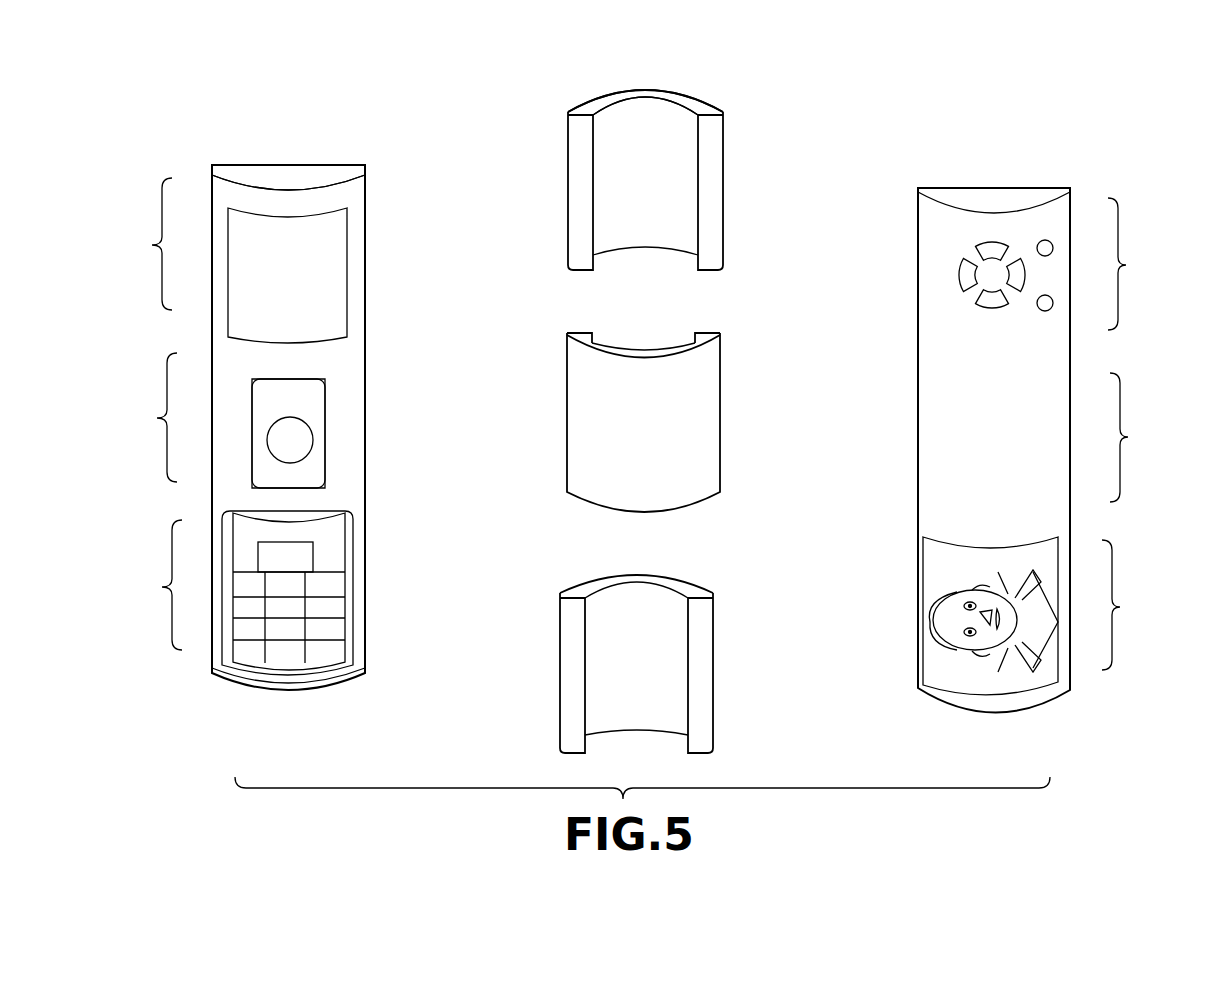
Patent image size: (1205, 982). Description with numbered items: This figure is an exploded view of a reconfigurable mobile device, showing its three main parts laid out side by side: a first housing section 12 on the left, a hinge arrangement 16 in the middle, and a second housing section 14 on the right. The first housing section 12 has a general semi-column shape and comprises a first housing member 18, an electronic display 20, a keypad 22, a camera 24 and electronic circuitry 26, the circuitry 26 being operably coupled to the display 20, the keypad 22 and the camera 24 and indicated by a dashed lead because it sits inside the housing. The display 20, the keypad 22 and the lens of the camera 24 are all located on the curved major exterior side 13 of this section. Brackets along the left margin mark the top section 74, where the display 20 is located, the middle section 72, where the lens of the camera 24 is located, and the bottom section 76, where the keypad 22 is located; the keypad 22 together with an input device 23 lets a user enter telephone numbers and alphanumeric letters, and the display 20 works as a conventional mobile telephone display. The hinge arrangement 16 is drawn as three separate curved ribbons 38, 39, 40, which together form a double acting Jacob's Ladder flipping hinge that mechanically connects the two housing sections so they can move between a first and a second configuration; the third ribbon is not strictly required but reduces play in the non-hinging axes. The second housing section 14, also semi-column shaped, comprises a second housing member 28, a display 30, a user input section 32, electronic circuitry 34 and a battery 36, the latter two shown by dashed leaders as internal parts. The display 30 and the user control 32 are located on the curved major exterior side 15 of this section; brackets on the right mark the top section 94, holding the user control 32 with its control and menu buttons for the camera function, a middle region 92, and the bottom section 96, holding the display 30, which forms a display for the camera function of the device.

The first housing section 12 is at (282, 691).
The major exterior side 13 is at (313, 200).
The second housing section 14 is at (960, 712).
The major exterior side 15 is at (1050, 403).
The hinge arrangement 16 is at (714, 80).
The first housing member 18 is at (366, 494).
The electronic display 20 is at (333, 243).
The keypad 22 is at (330, 600).
The input device 23 is at (296, 557).
The camera 24 is at (290, 440).
The electronic circuitry 26 is at (345, 385).
The second housing member 28 is at (918, 378).
The display 30 is at (950, 665).
The user input section 32 is at (940, 255).
The electronic circuitry 34 is at (960, 513).
The battery 36 is at (950, 463).
The ribbon 38 is at (722, 404).
The ribbon 39 is at (725, 167).
The ribbon 40 is at (714, 719).
The middle section 72 is at (151, 417).
The top section 74 is at (146, 244).
The bottom section 76 is at (156, 585).
The rear middle zone 92 is at (1138, 437).
The top section 94 is at (1100, 264).
The bottom section 96 is at (1131, 605).